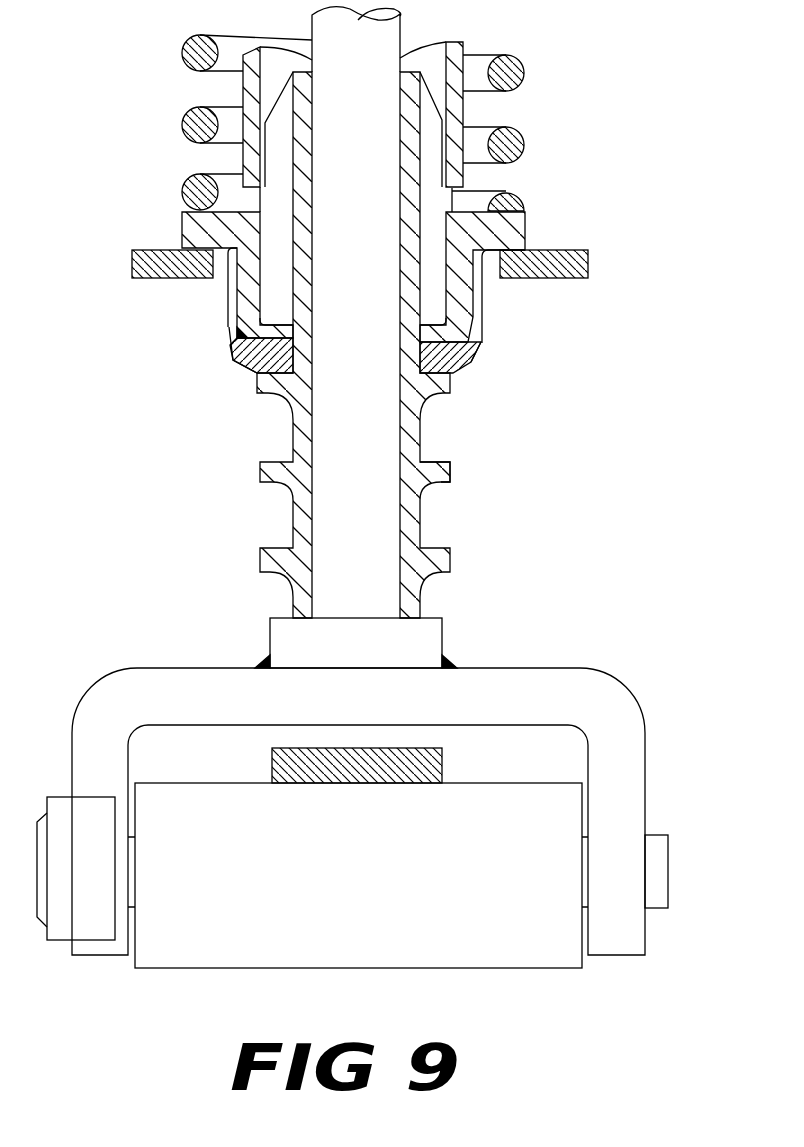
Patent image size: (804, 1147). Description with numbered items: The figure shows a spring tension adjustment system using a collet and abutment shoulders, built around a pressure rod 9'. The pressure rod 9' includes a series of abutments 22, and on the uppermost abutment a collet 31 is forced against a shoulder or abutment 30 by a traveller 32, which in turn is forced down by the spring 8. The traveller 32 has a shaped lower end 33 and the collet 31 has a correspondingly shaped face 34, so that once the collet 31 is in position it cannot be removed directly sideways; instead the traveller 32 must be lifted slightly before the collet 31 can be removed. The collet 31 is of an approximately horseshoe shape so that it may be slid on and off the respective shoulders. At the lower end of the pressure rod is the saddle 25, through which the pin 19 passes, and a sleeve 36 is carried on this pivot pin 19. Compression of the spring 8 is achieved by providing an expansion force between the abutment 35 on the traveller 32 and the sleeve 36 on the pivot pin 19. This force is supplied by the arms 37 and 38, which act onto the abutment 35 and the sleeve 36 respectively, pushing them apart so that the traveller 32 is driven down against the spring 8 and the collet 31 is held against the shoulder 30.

The spring 8 is at (506, 145).
The abutment 35 is at (513, 228).
The arm 37 is at (552, 268).
The traveller 32 is at (462, 303).
The shaped lower end 33 is at (483, 345).
The shoulder or abutment 30 is at (248, 343).
The collet 31 is at (448, 363).
The shaped face 34 is at (478, 362).
The pressure rod 9' is at (389, 370).
The abutments 22 is at (430, 462).
The saddle 25 is at (543, 692).
The arm 38 is at (442, 765).
The sleeve 36 is at (447, 945).
The pin 19 is at (655, 858).